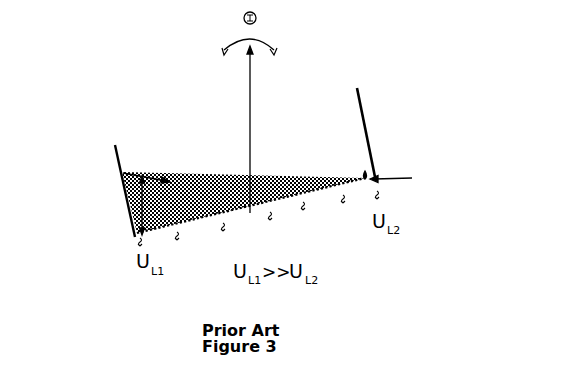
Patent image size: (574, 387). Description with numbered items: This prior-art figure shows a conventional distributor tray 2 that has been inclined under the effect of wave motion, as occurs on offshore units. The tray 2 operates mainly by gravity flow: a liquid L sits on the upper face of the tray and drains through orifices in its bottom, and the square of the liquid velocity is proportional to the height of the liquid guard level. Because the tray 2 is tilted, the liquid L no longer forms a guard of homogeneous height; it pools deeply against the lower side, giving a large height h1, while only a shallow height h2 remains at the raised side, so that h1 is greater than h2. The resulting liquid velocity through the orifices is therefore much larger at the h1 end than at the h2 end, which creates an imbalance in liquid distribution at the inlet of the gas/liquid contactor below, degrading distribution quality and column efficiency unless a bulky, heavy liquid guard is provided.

The liquid L is at (121, 172).
The tray 2 is at (412, 178).
The liquid level height on one side of the inclined tray h1 is at (146, 204).
The liquid level height on the other side of the inclined tray h2 is at (388, 176).